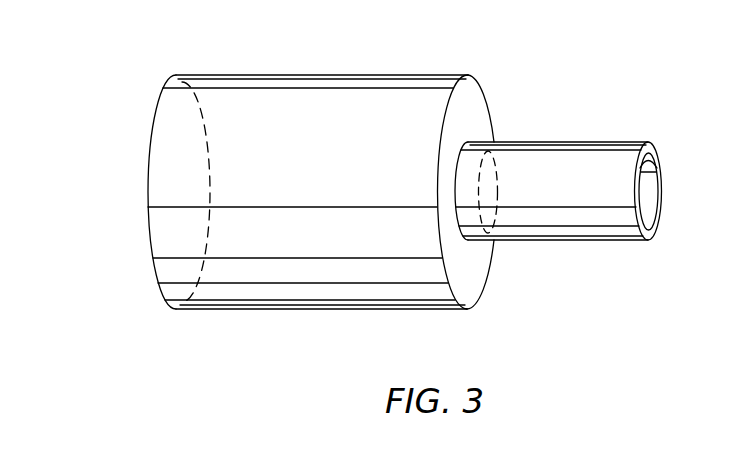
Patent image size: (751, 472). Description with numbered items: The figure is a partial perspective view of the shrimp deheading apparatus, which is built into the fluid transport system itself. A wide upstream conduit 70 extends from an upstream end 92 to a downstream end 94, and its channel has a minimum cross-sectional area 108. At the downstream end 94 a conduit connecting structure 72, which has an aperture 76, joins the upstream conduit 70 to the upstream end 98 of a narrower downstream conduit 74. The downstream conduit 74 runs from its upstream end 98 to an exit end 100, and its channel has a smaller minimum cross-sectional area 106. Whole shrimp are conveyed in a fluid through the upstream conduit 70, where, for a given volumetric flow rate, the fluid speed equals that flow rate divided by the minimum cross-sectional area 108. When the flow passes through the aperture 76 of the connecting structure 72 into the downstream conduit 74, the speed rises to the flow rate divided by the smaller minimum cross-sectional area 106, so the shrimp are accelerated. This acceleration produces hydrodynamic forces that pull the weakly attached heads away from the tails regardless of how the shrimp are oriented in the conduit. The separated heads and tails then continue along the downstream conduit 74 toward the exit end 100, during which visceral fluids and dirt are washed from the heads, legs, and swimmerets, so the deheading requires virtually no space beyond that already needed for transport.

The upstream conduit 70 is at (350, 75).
The conduit connecting structure 72 is at (470, 97).
The downstream conduit 74 is at (616, 142).
The aperture 76 is at (468, 180).
The upstream end 92 is at (162, 298).
The downstream end 94 is at (420, 306).
The upstream end 98 is at (518, 241).
The exit end 100 is at (648, 241).
The minimum cross-sectional area 106 is at (658, 167).
The minimum cross-sectional area 108 is at (152, 133).